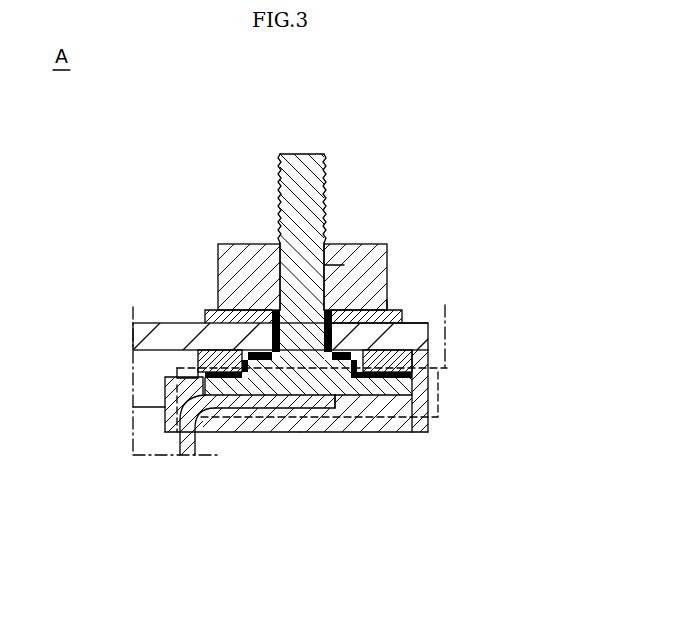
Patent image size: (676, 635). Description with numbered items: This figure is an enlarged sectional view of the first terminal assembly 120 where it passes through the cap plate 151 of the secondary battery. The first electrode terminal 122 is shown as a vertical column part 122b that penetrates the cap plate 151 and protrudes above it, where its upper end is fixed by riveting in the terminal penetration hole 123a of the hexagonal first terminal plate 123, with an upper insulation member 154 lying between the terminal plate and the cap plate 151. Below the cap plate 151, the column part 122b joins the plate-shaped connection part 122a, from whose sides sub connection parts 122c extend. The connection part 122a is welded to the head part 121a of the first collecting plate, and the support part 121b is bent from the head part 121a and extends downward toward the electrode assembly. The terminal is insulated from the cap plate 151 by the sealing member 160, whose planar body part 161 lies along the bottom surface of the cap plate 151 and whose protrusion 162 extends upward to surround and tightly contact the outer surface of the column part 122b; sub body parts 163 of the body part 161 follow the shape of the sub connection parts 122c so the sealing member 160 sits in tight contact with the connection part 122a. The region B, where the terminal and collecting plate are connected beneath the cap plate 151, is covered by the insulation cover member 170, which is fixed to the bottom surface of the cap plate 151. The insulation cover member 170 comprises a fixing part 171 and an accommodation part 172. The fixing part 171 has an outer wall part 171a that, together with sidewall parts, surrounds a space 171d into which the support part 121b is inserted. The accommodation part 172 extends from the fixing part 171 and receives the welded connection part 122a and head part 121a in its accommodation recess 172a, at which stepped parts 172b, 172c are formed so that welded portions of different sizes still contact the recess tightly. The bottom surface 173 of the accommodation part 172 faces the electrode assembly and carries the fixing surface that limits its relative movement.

The first terminal assembly 120 is at (350, 130).
The first electrode terminal 122 is at (270, 158).
The connection part 122a is at (203, 372).
The column part 122b is at (318, 178).
The sub connection part 122c is at (410, 408).
The first terminal plate 123 is at (256, 250).
The terminal penetration hole 123a is at (346, 262).
The cap plate 151 is at (143, 338).
The upper insulation member 154 is at (205, 314).
The sealing member 160 is at (374, 360).
The body part 161 is at (410, 323).
The protrusion 162 is at (387, 310).
The sub body part 163 is at (440, 366).
The insulation cover member 170 is at (388, 525).
The fixing part 171 is at (210, 424).
The outer wall part 171a is at (165, 416).
The space 171d is at (178, 437).
The accommodation part 172 is at (395, 440).
The accommodation recess 172a is at (282, 430).
The stepped part 172b is at (392, 418).
The stepped part 172c is at (417, 387).
The bottom surface 173 is at (343, 435).
The head part 121a is at (205, 383).
The support part 121b is at (192, 450).
The region B is at (443, 383).